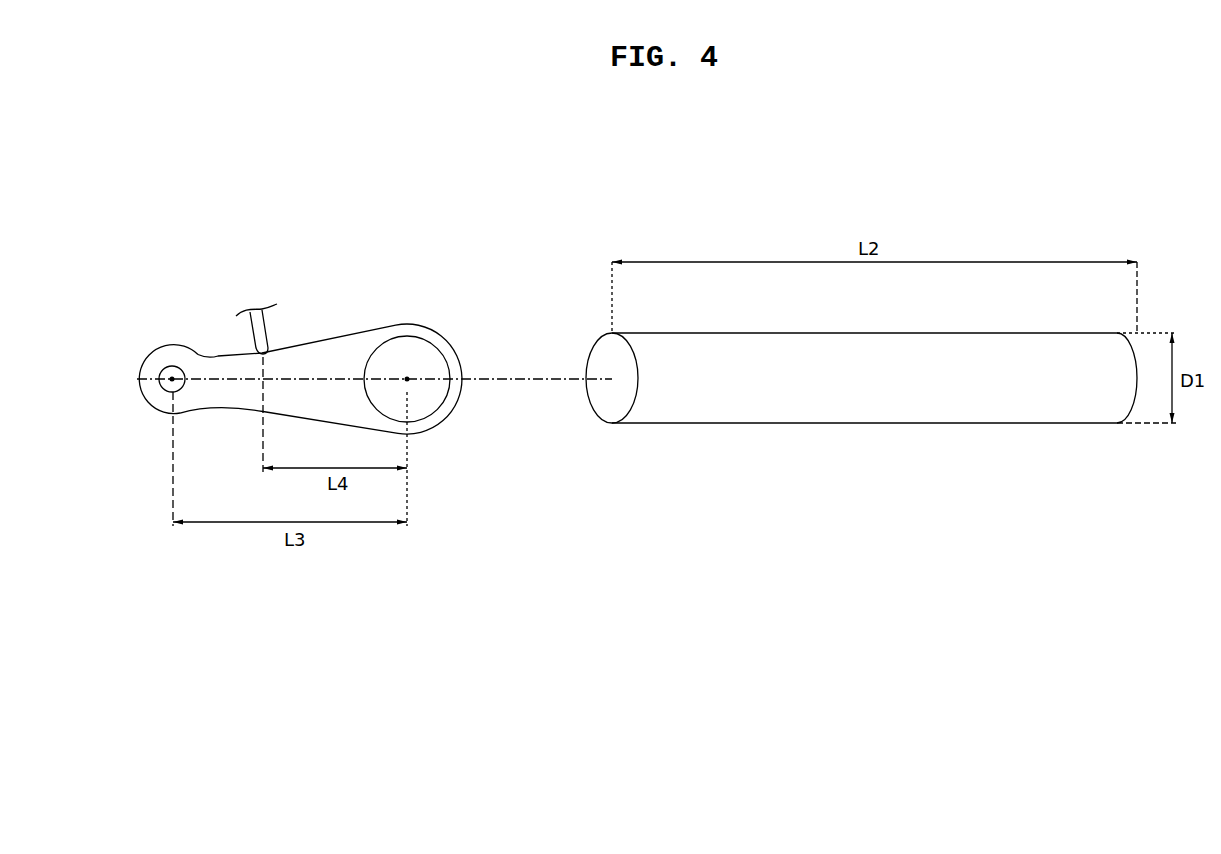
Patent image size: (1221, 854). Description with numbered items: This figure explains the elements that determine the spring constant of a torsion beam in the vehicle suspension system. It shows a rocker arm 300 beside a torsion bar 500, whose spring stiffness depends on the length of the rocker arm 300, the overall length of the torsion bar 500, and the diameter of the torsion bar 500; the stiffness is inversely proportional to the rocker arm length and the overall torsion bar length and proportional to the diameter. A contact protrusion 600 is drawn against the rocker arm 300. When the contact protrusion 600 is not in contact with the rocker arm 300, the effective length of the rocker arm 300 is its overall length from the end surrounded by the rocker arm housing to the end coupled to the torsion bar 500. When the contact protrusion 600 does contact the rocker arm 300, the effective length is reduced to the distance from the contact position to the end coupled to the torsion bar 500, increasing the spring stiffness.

The rocker arm 300 is at (214, 372).
The torsion bar 500 is at (882, 403).
The contact protrusion 600 is at (251, 337).